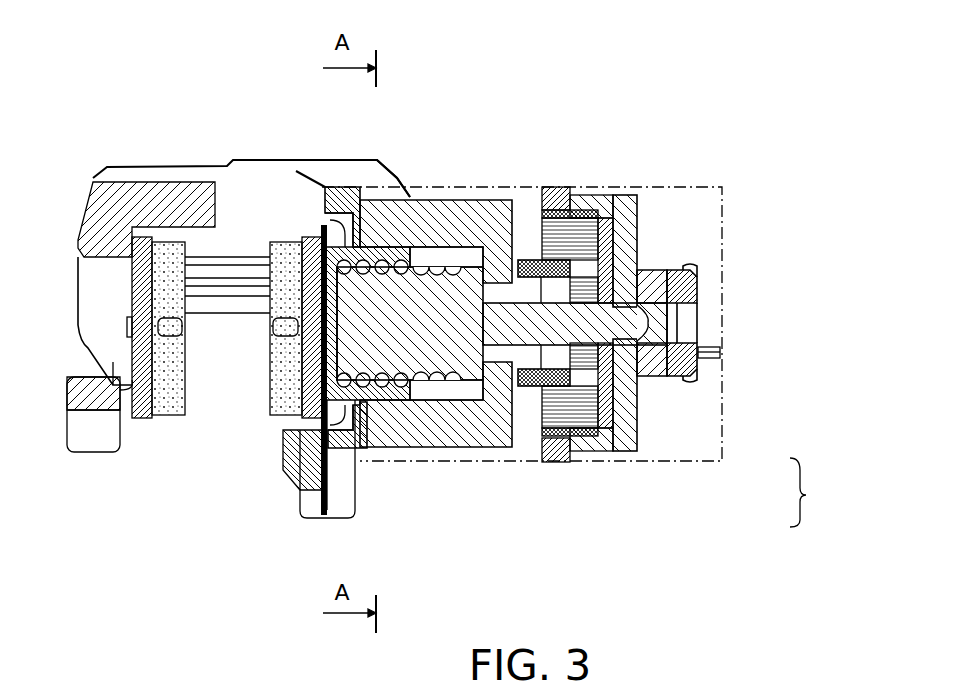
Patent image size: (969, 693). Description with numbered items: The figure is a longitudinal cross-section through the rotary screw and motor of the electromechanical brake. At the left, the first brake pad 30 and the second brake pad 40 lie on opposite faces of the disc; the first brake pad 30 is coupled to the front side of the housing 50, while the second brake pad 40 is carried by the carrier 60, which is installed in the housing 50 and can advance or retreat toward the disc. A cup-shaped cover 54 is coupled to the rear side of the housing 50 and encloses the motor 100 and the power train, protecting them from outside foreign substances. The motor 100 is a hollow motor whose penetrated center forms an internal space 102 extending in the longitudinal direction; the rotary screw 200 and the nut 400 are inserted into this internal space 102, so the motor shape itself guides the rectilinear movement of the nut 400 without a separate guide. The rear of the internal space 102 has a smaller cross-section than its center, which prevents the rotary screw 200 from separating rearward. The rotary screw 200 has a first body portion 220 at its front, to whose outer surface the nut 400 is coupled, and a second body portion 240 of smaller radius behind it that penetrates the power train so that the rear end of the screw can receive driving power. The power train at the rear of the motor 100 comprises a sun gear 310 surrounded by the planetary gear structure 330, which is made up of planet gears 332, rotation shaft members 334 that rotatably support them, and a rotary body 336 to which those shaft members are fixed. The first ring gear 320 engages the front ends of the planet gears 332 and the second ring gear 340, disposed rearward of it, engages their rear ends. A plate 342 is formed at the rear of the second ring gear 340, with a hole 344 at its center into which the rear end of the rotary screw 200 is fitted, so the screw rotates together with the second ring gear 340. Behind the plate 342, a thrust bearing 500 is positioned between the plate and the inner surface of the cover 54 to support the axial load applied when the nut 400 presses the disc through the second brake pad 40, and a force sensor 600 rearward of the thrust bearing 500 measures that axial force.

The first brake pad 30 is at (157, 417).
The second brake pad 40 is at (273, 395).
The housing 50 is at (180, 158).
The cover 54 is at (413, 183).
The carrier 60 is at (292, 458).
The motor 100 is at (450, 257).
The internal space 102 is at (447, 192).
The rotary screw 200 is at (525, 355).
The first body portion 220 is at (447, 368).
The second body portion 240 is at (483, 362).
The sun gear 310 is at (523, 260).
The first ring gear 320 is at (553, 187).
The planetary gear structure 330 is at (701, 357).
The planet gears 332 is at (585, 425).
The rotation shaft members 334 is at (605, 412).
The rotary body 336 is at (617, 390).
The second ring gear 340 is at (655, 178).
The plate 342 is at (622, 188).
The hole 344 is at (697, 281).
The nut 400 is at (400, 420).
The thrust bearing 500 is at (653, 270).
The force sensor 600 is at (715, 358).